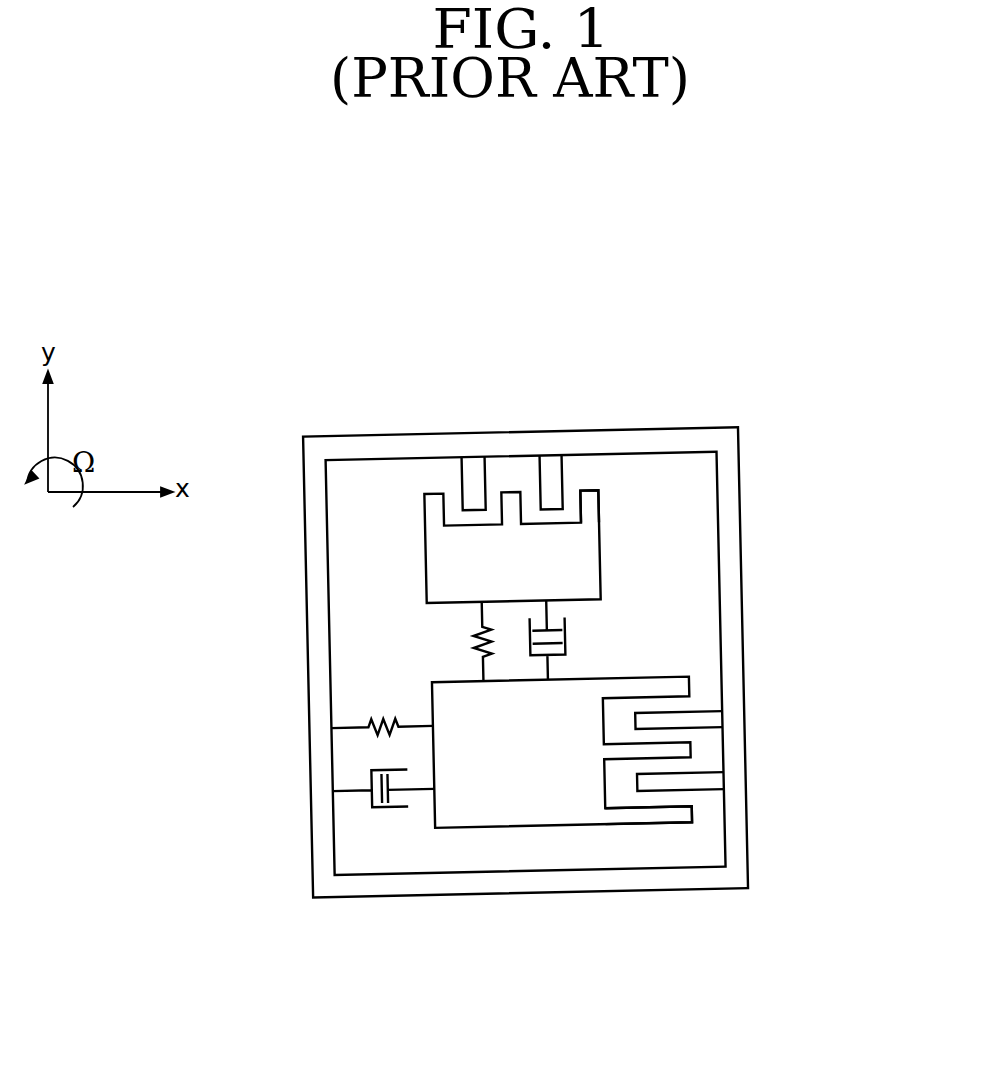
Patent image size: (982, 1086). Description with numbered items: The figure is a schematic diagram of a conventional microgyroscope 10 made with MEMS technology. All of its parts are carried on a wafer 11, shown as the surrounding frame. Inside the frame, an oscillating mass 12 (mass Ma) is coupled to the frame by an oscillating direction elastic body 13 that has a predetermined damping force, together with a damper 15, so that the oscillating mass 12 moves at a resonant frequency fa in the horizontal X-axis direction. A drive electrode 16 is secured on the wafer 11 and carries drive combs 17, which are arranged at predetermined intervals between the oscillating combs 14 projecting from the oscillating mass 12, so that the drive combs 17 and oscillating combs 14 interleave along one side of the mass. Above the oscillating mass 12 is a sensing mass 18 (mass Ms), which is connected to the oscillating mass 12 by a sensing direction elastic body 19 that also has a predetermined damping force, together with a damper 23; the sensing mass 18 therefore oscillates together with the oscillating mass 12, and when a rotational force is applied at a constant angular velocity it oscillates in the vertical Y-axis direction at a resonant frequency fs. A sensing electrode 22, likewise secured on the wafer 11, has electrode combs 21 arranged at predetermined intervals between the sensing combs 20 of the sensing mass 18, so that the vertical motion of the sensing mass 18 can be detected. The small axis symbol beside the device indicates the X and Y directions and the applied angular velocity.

The microgyroscope 10 is at (222, 263).
The wafer 11 is at (322, 887).
The oscillating mass 12 is at (518, 840).
The oscillating direction elastic body 13 is at (370, 723).
The oscillating combs 14 is at (668, 812).
The damper 15 is at (370, 781).
The drive electrode 16 is at (699, 797).
The drive combs 17 is at (688, 782).
The sensing mass 18 is at (609, 581).
The sensing direction elastic body 19 is at (478, 640).
The sensing combs 20 is at (590, 502).
The electrode combs 21 is at (547, 490).
The sensing electrode 22 is at (458, 476).
The damper 23 is at (567, 632).